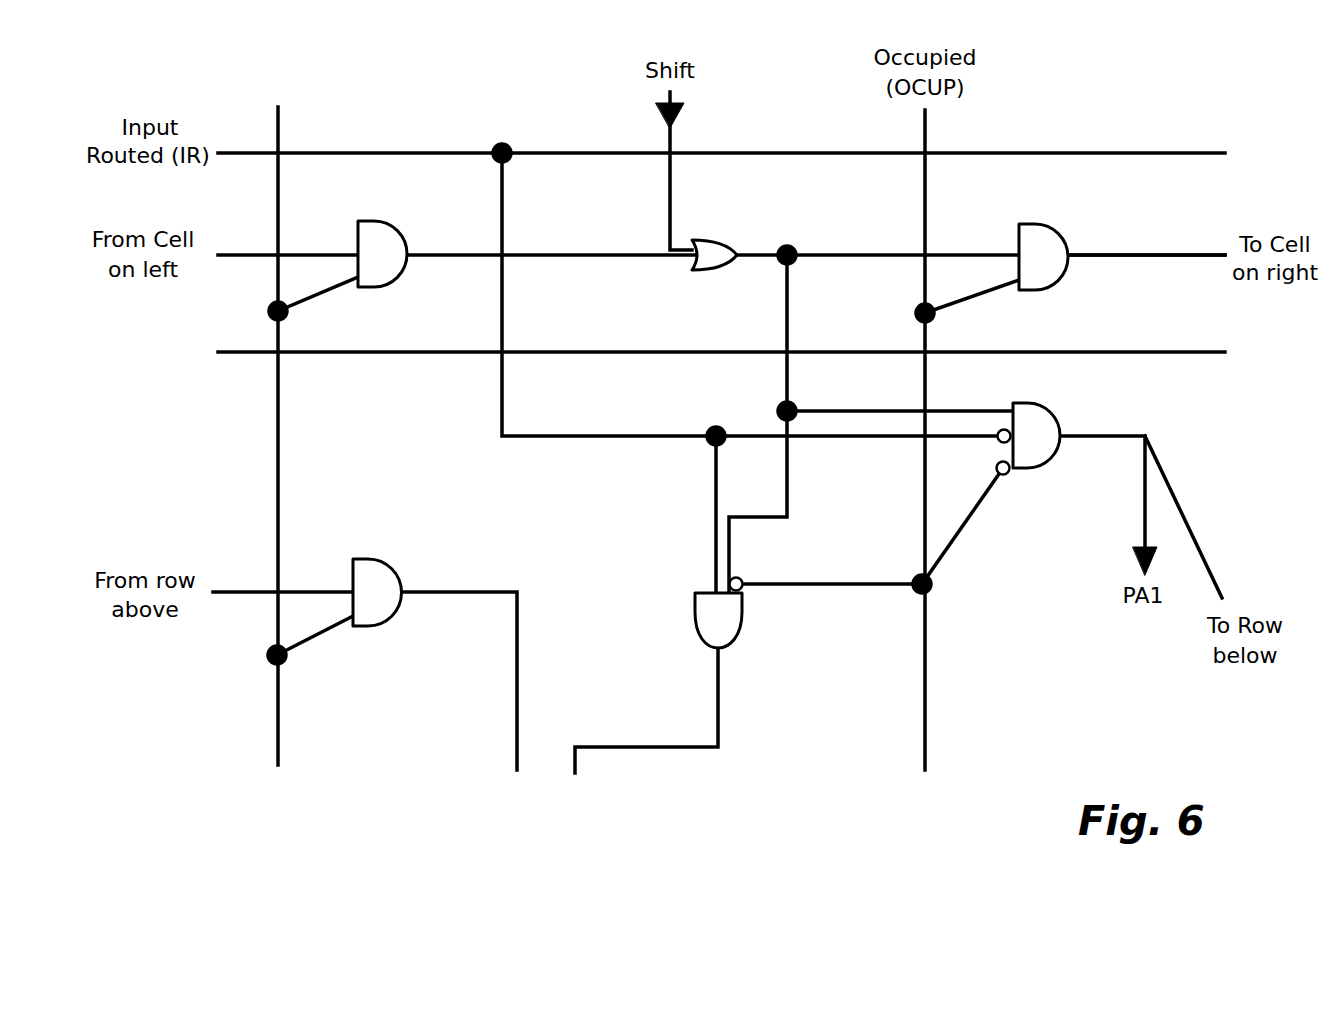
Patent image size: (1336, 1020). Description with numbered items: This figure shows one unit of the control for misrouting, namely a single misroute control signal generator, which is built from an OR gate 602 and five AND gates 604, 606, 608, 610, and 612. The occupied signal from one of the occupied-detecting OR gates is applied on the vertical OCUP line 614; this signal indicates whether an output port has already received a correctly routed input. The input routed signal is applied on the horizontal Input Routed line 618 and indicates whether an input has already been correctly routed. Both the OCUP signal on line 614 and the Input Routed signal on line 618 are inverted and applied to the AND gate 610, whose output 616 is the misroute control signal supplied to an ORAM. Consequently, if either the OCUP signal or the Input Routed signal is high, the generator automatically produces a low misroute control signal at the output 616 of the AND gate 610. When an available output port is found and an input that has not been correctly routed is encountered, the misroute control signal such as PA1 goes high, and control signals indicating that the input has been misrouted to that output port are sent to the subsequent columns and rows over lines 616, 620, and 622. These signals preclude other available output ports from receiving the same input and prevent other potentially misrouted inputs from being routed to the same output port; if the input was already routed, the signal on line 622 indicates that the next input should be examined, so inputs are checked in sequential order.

The OR gate 602 is at (728, 205).
The AND gate 604 is at (368, 218).
The AND gate 606 is at (393, 615).
The AND gate 608 is at (1032, 223).
The AND gate 610 is at (1047, 403).
The AND gate 612 is at (745, 618).
The OCUP line 614 is at (929, 145).
The output of the AND gate 616 is at (1100, 433).
The Input Routed line 618 is at (234, 150).
The line 620 is at (1130, 254).
The line 622 is at (598, 742).